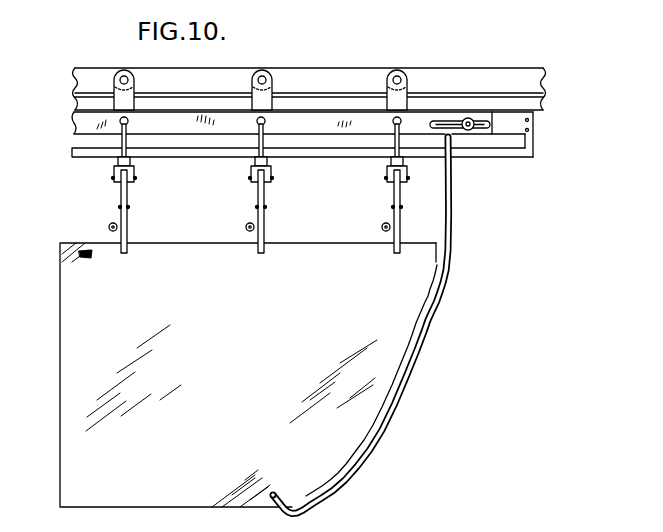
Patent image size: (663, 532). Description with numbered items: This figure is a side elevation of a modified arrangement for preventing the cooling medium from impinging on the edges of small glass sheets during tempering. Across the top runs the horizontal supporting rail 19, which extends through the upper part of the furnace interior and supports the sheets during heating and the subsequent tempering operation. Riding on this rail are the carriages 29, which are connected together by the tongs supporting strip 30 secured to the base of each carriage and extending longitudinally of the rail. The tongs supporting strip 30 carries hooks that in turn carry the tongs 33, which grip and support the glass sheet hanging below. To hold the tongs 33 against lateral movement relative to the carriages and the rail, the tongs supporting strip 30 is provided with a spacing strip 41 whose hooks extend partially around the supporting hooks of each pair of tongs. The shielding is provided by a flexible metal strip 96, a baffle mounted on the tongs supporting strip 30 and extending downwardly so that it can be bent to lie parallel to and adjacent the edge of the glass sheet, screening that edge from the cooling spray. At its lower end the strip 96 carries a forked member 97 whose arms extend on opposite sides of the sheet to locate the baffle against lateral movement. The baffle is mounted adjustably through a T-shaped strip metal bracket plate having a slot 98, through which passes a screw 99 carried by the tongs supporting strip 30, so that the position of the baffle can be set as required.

The horizontal supporting rail 19 is at (336, 83).
The carriage 29 is at (270, 78).
The tongs supporting strip 30 is at (306, 122).
The spacing strip 41 is at (218, 150).
The tongs 33 is at (131, 206).
The flexible metal strip 96 is at (431, 320).
The forked member 97 is at (278, 496).
The slot 98 is at (455, 128).
The screw 99 is at (470, 117).